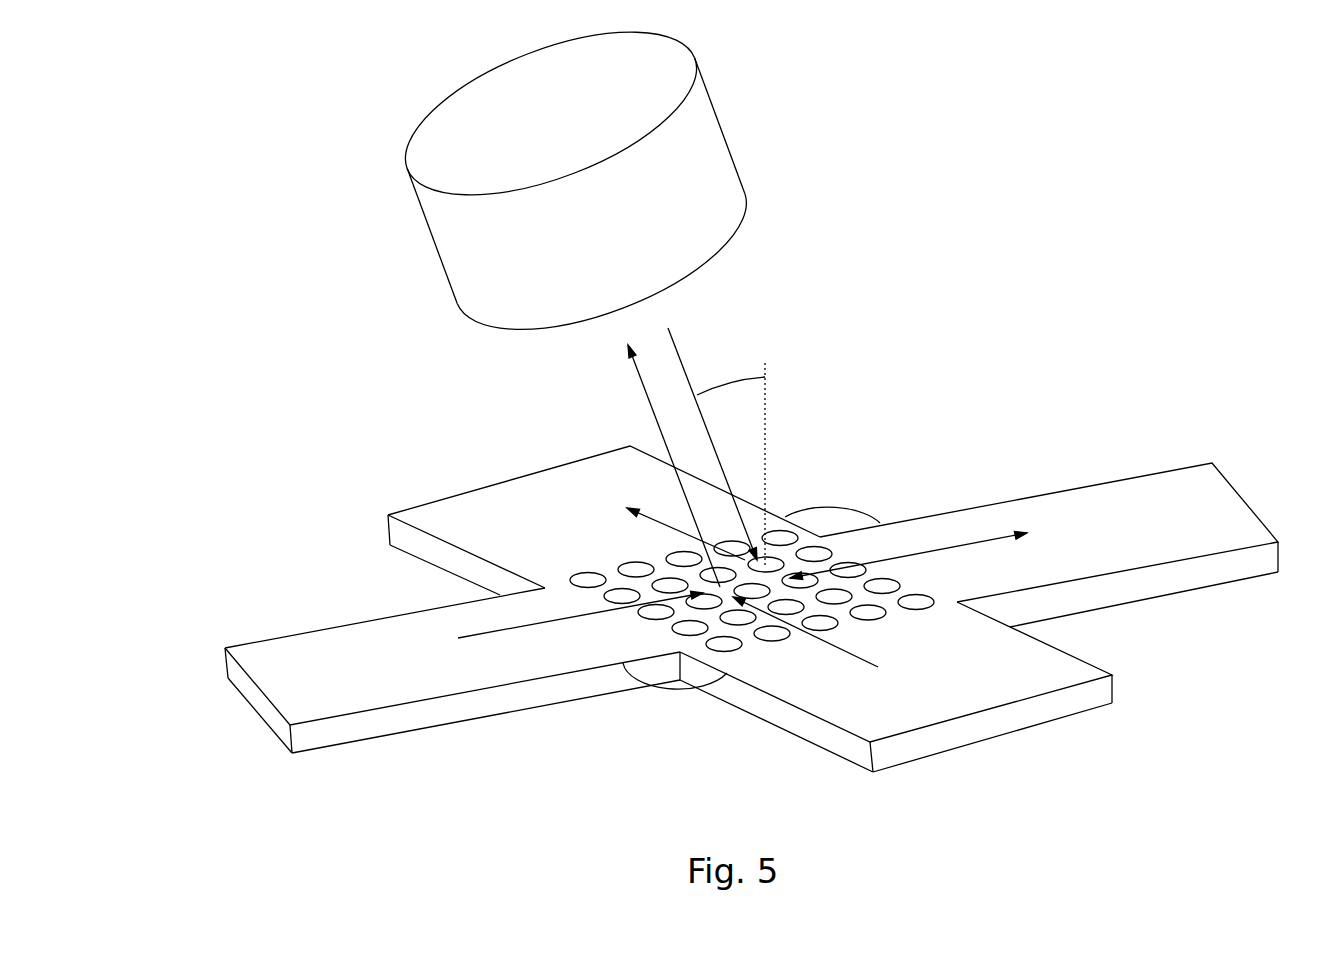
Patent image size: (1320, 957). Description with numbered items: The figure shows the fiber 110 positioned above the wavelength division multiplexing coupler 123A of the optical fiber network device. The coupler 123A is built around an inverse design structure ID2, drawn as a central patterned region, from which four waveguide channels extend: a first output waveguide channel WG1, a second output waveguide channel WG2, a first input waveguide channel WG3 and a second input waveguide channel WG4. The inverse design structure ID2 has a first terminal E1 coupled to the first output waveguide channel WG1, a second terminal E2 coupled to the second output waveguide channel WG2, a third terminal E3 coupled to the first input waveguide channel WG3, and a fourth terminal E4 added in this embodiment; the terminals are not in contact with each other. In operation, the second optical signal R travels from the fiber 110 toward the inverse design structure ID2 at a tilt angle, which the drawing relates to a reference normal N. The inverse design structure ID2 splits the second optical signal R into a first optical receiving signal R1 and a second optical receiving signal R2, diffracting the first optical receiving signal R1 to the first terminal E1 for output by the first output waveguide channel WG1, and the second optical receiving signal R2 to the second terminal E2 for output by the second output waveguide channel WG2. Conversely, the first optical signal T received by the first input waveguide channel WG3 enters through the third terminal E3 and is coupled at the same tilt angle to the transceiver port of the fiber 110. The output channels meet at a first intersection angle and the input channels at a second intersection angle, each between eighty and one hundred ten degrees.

The fiber 110 is at (718, 163).
The second optical signal R is at (687, 360).
The surface normal N is at (767, 387).
The first optical signal T is at (652, 403).
The first output waveguide channel WG1 is at (393, 528).
The second output waveguide channel WG2 is at (1012, 515).
The first input waveguide channel WG3 is at (230, 665).
The second input waveguide channel WG4 is at (1065, 710).
The first optical receiving signal R1 is at (662, 523).
The second optical receiving signal R2 is at (960, 546).
The first terminal E1 is at (617, 568).
The second terminal E2 is at (846, 568).
The third terminal E3 is at (640, 615).
The fourth terminal E4 is at (793, 640).
The inverse design structure ID2 is at (887, 603).
The wavelength division multiplexing coupler 123A is at (1200, 363).